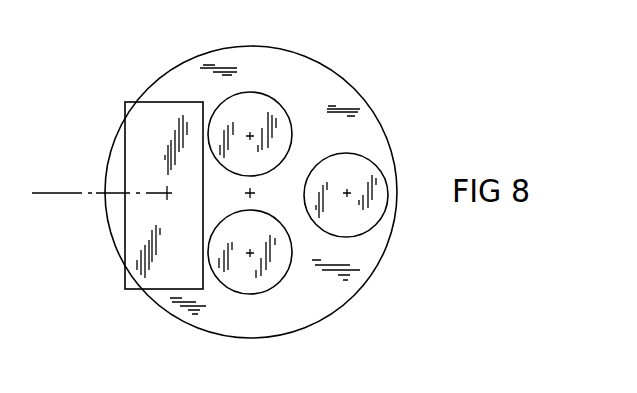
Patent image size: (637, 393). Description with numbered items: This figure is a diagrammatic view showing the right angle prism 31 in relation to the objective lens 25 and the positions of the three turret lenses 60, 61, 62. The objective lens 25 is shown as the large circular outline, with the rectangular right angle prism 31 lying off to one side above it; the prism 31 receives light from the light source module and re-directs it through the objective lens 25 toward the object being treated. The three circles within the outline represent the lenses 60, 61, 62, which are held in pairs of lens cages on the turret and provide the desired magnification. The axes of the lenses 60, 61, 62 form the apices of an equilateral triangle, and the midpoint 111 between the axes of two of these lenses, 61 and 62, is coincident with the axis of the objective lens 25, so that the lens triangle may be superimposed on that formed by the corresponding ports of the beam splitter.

The objective lens 25 is at (350, 83).
The right angle prism 31 is at (170, 272).
The lens 60 is at (370, 158).
The lens 61 is at (233, 292).
The lens 62 is at (248, 92).
The midpoint 111 is at (256, 192).